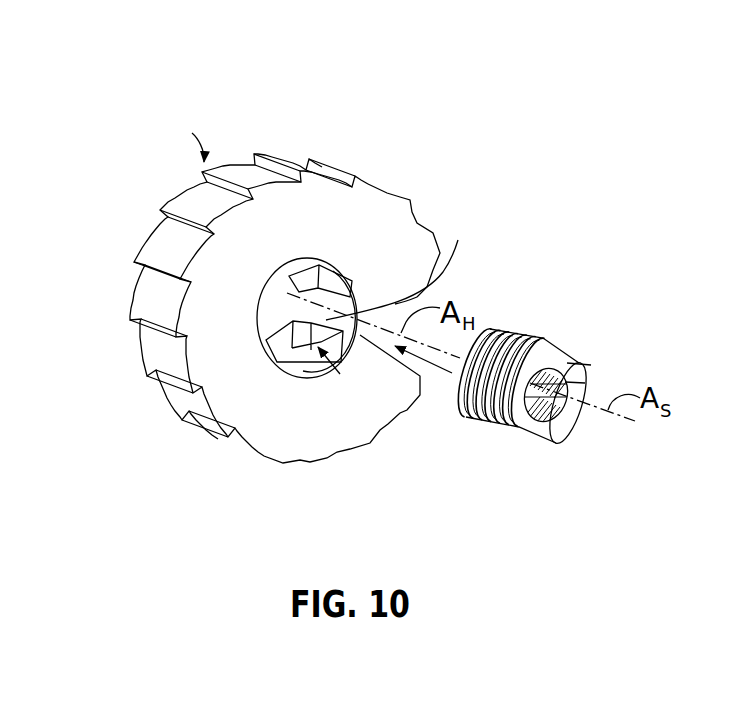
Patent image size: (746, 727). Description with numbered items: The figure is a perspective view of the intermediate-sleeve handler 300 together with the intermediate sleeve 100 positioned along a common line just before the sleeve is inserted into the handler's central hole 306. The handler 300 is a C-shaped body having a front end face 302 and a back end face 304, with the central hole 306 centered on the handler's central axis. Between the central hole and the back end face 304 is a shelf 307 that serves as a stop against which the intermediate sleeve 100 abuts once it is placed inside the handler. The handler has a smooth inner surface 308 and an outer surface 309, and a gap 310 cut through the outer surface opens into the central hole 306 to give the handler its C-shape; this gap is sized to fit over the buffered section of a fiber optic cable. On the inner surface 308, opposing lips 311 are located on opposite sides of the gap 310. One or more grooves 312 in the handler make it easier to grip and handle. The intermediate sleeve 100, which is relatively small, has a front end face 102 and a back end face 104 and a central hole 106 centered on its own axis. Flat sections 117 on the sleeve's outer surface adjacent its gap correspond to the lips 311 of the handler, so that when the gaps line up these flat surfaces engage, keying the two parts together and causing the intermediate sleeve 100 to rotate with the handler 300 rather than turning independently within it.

The intermediate-sleeve handler 300 is at (150, 147).
The front end face 302 is at (325, 167).
The back end face 304 is at (256, 150).
The central hole 306 is at (322, 390).
The shelf 307 is at (336, 331).
The inner surface 308 is at (346, 297).
The outer surface 309 is at (182, 214).
The gap 310 is at (467, 290).
The lips 311 is at (322, 307).
The grooves 312 is at (178, 244).
The intermediate sleeve 100 is at (550, 327).
The front end face 102 is at (577, 365).
The back end face 104 is at (505, 350).
The central hole 106 is at (554, 420).
The flat sections 117 is at (579, 383).